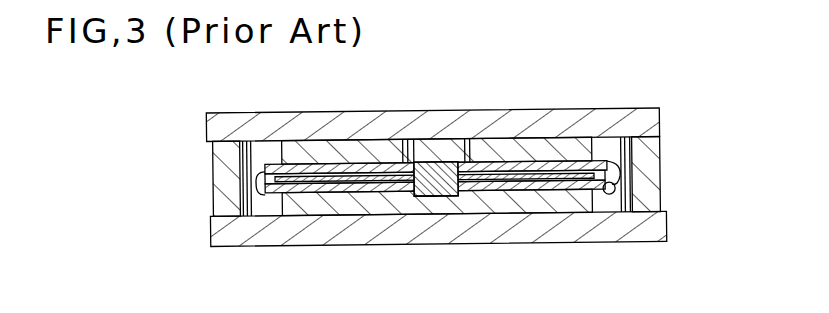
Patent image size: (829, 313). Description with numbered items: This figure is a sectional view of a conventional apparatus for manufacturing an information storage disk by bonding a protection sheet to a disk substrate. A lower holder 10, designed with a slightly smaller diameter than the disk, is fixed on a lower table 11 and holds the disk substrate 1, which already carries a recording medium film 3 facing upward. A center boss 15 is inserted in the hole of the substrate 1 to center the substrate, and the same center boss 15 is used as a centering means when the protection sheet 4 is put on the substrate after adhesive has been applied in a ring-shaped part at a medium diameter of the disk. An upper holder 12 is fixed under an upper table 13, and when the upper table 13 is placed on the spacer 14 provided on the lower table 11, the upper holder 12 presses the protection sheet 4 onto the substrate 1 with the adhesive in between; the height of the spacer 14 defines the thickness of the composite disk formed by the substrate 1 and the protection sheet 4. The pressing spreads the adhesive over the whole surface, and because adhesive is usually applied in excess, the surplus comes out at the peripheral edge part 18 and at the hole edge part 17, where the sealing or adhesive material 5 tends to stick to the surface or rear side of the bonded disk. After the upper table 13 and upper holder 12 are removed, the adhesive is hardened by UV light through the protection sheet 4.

The disk substrate 1 is at (548, 177).
The recording medium film 3 is at (563, 185).
The protection sheet 4 is at (540, 166).
The sealing member 5 is at (483, 174).
The lower holder 10 is at (335, 204).
The lower table 11 is at (270, 236).
The upper holder 12 is at (348, 151).
The upper table 13 is at (288, 124).
The spacer 14 is at (645, 175).
The center boss 15 is at (438, 197).
The hole edge part 17 is at (412, 195).
The peripheral edge part 18 is at (626, 214).